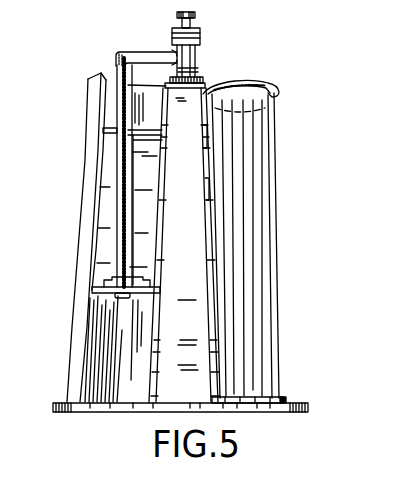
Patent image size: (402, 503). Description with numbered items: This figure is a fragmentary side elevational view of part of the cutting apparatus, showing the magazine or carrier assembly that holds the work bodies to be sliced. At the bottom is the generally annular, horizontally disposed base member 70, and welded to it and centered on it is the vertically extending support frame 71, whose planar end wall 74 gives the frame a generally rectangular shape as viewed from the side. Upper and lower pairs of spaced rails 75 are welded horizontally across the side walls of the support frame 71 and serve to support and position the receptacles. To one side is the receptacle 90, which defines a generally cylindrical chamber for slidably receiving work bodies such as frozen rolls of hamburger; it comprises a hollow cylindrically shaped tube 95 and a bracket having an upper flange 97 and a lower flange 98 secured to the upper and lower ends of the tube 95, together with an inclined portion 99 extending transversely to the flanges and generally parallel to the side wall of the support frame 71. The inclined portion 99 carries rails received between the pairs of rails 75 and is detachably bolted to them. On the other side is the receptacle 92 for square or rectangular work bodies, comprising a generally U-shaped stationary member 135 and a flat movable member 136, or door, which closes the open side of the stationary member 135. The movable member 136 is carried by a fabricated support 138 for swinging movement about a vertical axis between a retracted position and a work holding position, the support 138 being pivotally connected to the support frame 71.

The base member 70 is at (309, 407).
The vertical support frame 71 is at (190, 103).
The end wall 74 is at (184, 245).
The rails 75 is at (207, 156).
The receptacle 90 is at (259, 241).
The receptacle 92 is at (98, 230).
The tube 95 is at (268, 263).
The upper flange 97 is at (279, 91).
The lower flange 98 is at (284, 398).
The inclined portion 99 is at (207, 181).
The stationary member 135 is at (81, 247).
The movable member 136 is at (108, 206).
The fabricated support 138 is at (133, 41).